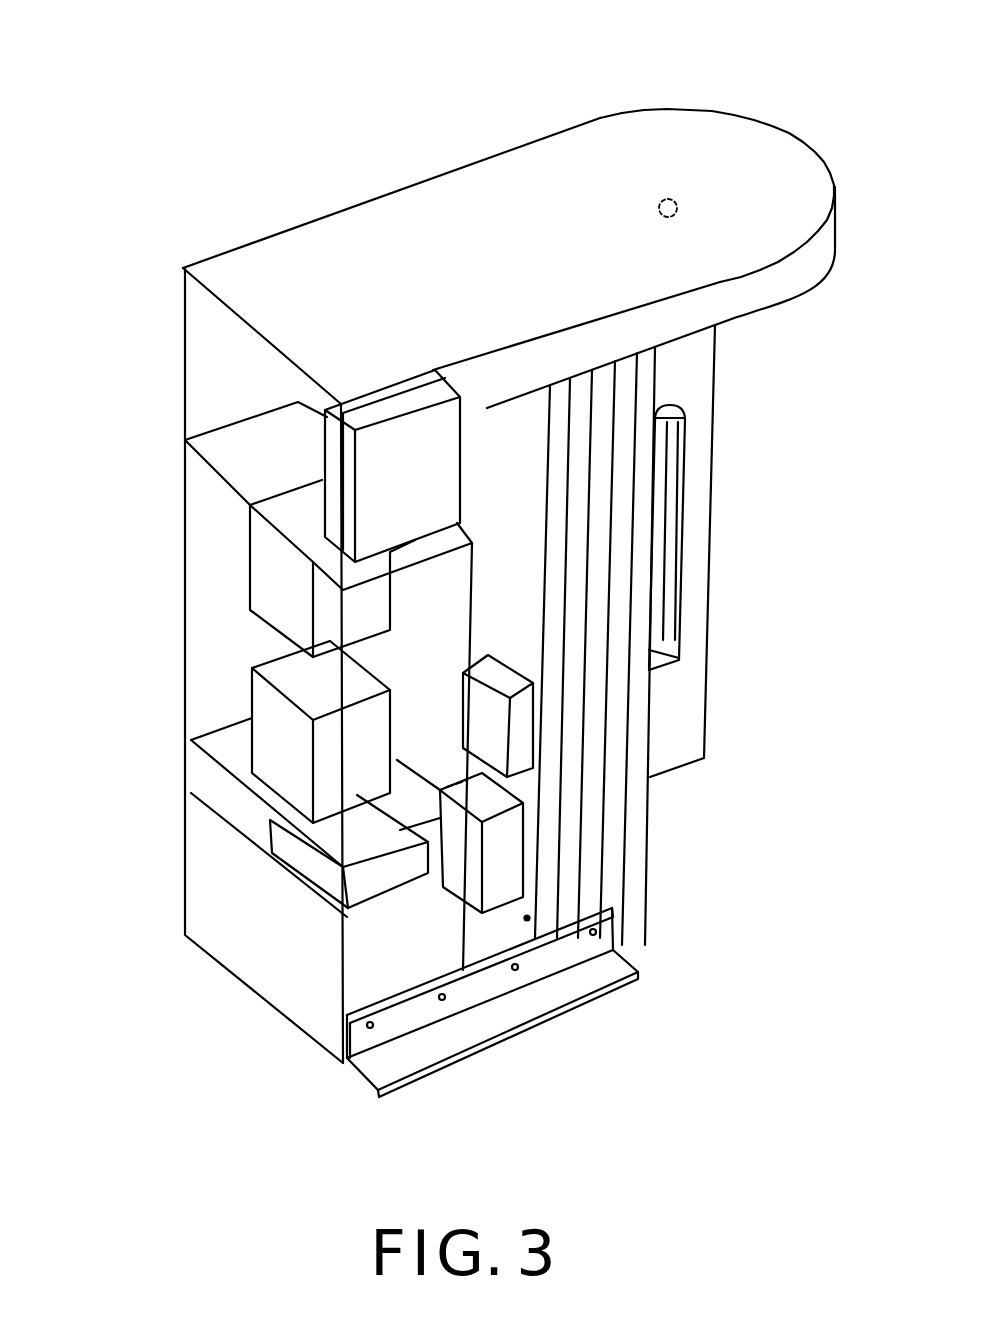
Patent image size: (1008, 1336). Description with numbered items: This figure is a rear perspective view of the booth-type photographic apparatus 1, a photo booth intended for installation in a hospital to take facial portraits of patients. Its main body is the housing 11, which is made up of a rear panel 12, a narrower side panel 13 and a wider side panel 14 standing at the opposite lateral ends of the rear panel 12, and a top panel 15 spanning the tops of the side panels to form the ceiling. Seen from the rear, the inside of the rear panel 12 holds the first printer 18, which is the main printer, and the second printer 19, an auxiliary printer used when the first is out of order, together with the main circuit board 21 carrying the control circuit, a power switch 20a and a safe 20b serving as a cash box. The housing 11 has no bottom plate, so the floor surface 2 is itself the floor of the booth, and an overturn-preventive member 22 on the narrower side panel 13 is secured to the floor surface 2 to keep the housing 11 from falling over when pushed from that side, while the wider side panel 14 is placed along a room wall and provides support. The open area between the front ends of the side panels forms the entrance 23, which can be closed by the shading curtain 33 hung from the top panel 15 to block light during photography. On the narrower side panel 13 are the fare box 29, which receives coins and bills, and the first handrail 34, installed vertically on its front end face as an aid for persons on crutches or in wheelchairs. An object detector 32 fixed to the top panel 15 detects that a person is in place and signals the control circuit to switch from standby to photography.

The photographic apparatus 1 is at (748, 84).
The floor surface 2 is at (703, 842).
The housing 11 is at (220, 270).
The rear panel 12 is at (182, 391).
The side panel 13 is at (527, 918).
The side panel 14 is at (690, 648).
The top panel 15 is at (473, 215).
The printer 18 is at (270, 587).
The printer 19 is at (277, 740).
The power switch 20a is at (387, 873).
The safe 20b is at (492, 897).
The main circuit board 21 is at (383, 440).
The overturn-preventive member 22 is at (408, 1057).
The entrance 23 is at (683, 720).
The fare box 29 is at (488, 672).
The object detector 32 is at (674, 207).
The shading curtain 33 is at (633, 900).
The first handrail 34 is at (673, 527).